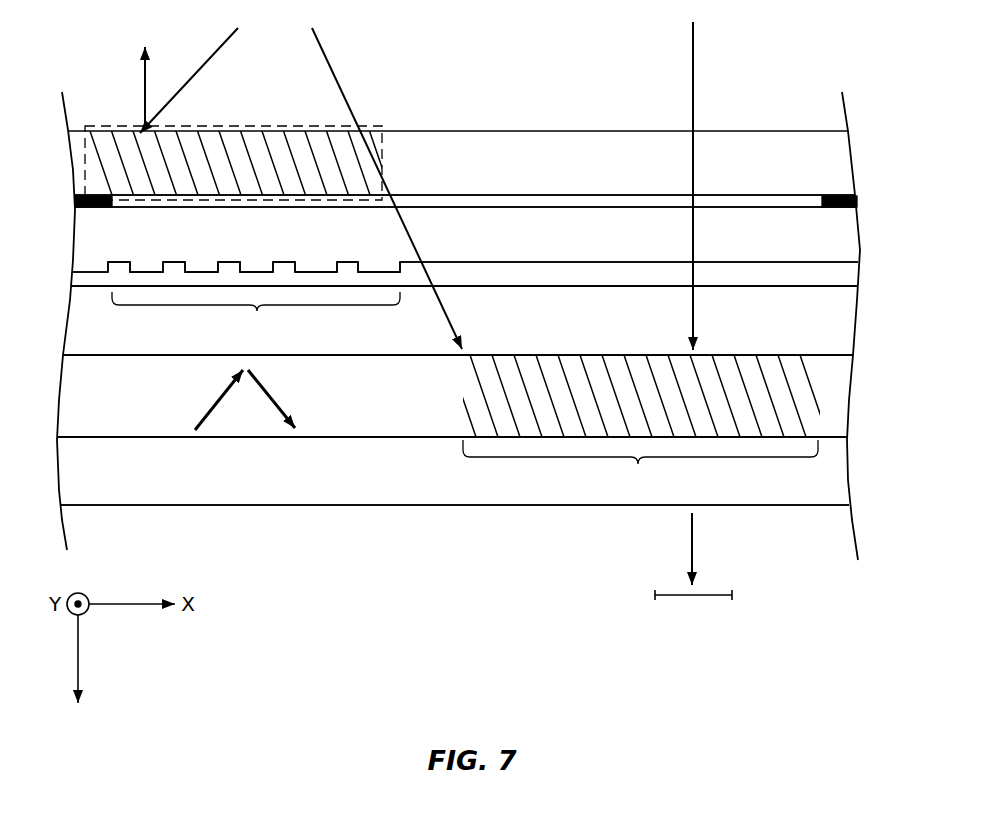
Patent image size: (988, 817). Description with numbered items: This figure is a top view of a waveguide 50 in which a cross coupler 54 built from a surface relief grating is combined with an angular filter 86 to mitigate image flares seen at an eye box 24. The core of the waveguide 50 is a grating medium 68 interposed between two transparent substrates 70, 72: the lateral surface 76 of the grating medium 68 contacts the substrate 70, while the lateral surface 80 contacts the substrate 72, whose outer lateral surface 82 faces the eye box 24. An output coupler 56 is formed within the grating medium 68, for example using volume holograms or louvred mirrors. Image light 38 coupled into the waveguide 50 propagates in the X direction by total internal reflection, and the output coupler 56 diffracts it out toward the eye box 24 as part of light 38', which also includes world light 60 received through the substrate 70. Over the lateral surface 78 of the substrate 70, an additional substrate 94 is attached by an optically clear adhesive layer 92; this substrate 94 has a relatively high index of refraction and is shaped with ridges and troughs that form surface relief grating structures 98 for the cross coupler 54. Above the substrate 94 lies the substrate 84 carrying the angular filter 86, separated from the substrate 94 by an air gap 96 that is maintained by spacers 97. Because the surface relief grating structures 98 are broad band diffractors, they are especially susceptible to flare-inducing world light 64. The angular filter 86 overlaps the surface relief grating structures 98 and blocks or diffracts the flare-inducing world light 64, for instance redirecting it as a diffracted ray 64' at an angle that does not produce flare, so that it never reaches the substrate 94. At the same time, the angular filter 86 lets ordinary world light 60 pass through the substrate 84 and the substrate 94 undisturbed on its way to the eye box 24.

The eye box 24 is at (690, 598).
The image light 38 is at (255, 400).
The light 38' is at (730, 549).
The waveguide 50 is at (885, 117).
The cross coupler 54 is at (256, 313).
The output coupler 56 is at (649, 425).
The world light 60 is at (327, 55).
The flare-inducing world light 64 is at (215, 80).
The diffracted ray 64' is at (172, 75).
The grating medium 68 is at (62, 392).
The substrate 70 is at (72, 350).
The substrate 72 is at (58, 472).
The lateral surface 76 is at (115, 363).
The lateral surface 78 is at (110, 290).
The lateral surface 80 is at (113, 442).
The lateral surface 82 is at (113, 507).
The substrate 84 is at (78, 164).
The angular filter 86 is at (90, 126).
The optically clear adhesive layer 92 is at (85, 282).
The substrate 94 is at (82, 240).
The air gap 96 is at (545, 195).
The spacers 97 is at (75, 200).
The surface relief grating structures 98 is at (213, 258).